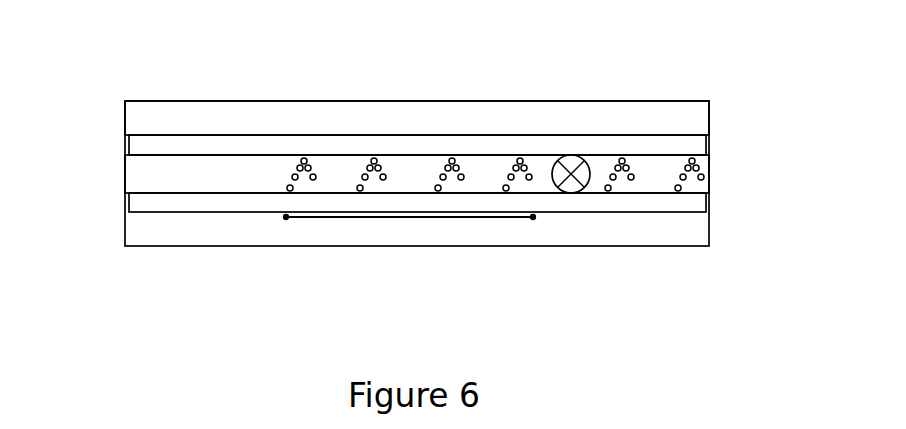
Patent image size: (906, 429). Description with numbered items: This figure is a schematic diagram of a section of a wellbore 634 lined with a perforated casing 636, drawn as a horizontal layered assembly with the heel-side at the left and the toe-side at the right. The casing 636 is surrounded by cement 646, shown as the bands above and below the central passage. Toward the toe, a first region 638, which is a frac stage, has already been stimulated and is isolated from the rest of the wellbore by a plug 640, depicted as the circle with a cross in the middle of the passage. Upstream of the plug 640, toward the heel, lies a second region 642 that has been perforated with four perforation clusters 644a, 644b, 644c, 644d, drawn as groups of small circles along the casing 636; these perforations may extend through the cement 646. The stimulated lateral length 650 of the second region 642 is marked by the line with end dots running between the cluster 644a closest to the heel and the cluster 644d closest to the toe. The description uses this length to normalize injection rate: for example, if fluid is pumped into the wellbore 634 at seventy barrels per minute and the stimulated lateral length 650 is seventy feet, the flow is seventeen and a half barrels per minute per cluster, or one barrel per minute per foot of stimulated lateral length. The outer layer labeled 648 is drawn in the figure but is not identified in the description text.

The wellbore 634 is at (104, 207).
The perforated casing 636 is at (182, 153).
The first region 638 is at (668, 155).
The plug 640 is at (572, 186).
The second region 642 is at (342, 153).
The perforation cluster 644a is at (305, 157).
The perforation cluster 644b is at (373, 157).
The perforation cluster 644c is at (452, 157).
The perforation cluster 644d is at (520, 157).
The cement 646 is at (265, 203).
The upper layer 648 is at (148, 117).
The stimulated lateral length 650 is at (315, 220).